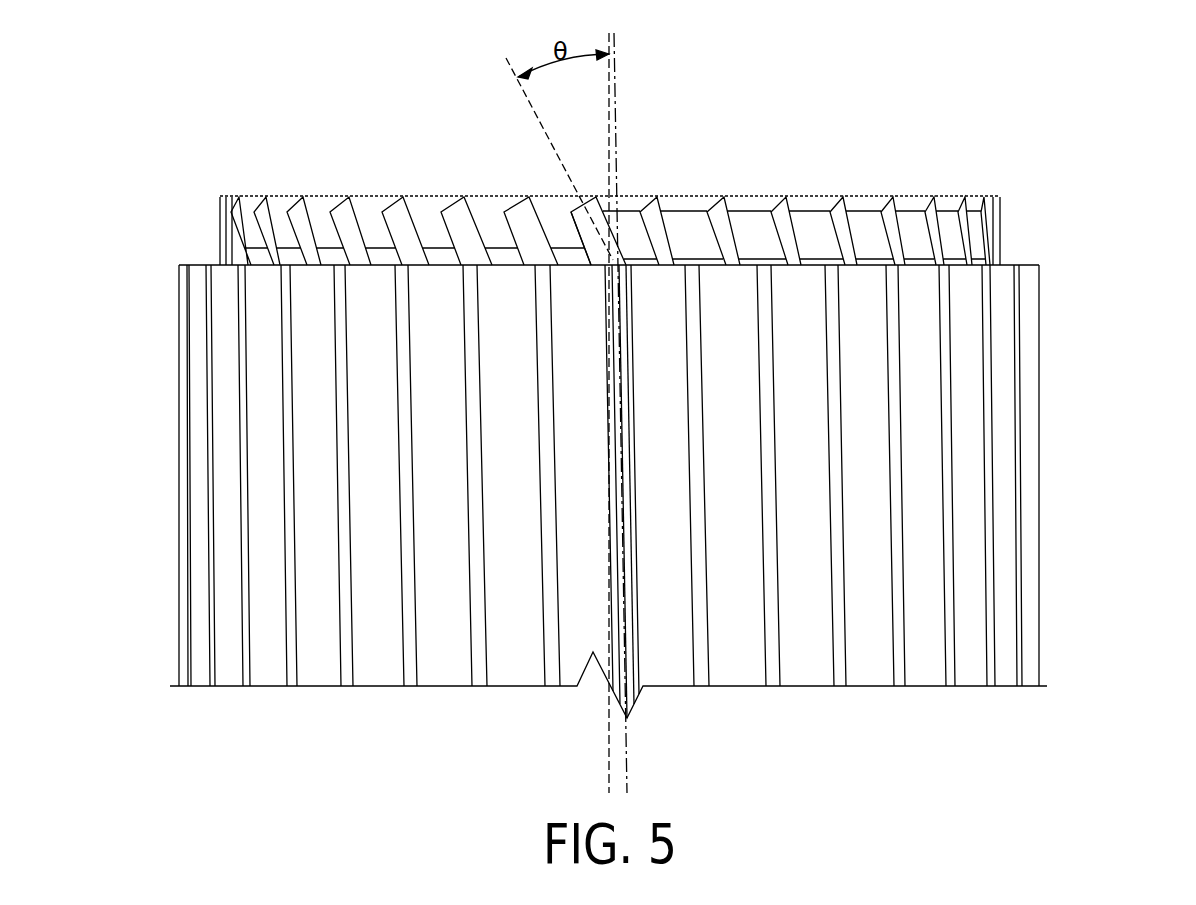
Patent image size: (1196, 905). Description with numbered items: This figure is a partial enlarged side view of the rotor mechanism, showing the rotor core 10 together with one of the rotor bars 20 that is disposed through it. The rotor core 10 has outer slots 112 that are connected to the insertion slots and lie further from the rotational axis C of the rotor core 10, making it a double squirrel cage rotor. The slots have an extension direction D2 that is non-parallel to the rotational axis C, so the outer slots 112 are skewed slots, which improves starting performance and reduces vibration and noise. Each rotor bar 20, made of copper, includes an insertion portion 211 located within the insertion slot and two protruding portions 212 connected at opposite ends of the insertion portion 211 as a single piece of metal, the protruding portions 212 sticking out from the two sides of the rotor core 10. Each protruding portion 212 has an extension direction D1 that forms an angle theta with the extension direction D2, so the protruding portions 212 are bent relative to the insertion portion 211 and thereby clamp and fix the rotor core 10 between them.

The rotor core 10 is at (1048, 262).
The rotor bar 20 is at (576, 205).
The insertion portion 211 is at (629, 410).
The protruding portion 212 is at (573, 215).
The outer slot 112 is at (625, 450).
The rotational axis C is at (609, 113).
The extension direction of the protruding portion D1 is at (517, 86).
The extension direction of the insertion slot and outer slot D2 is at (616, 128).